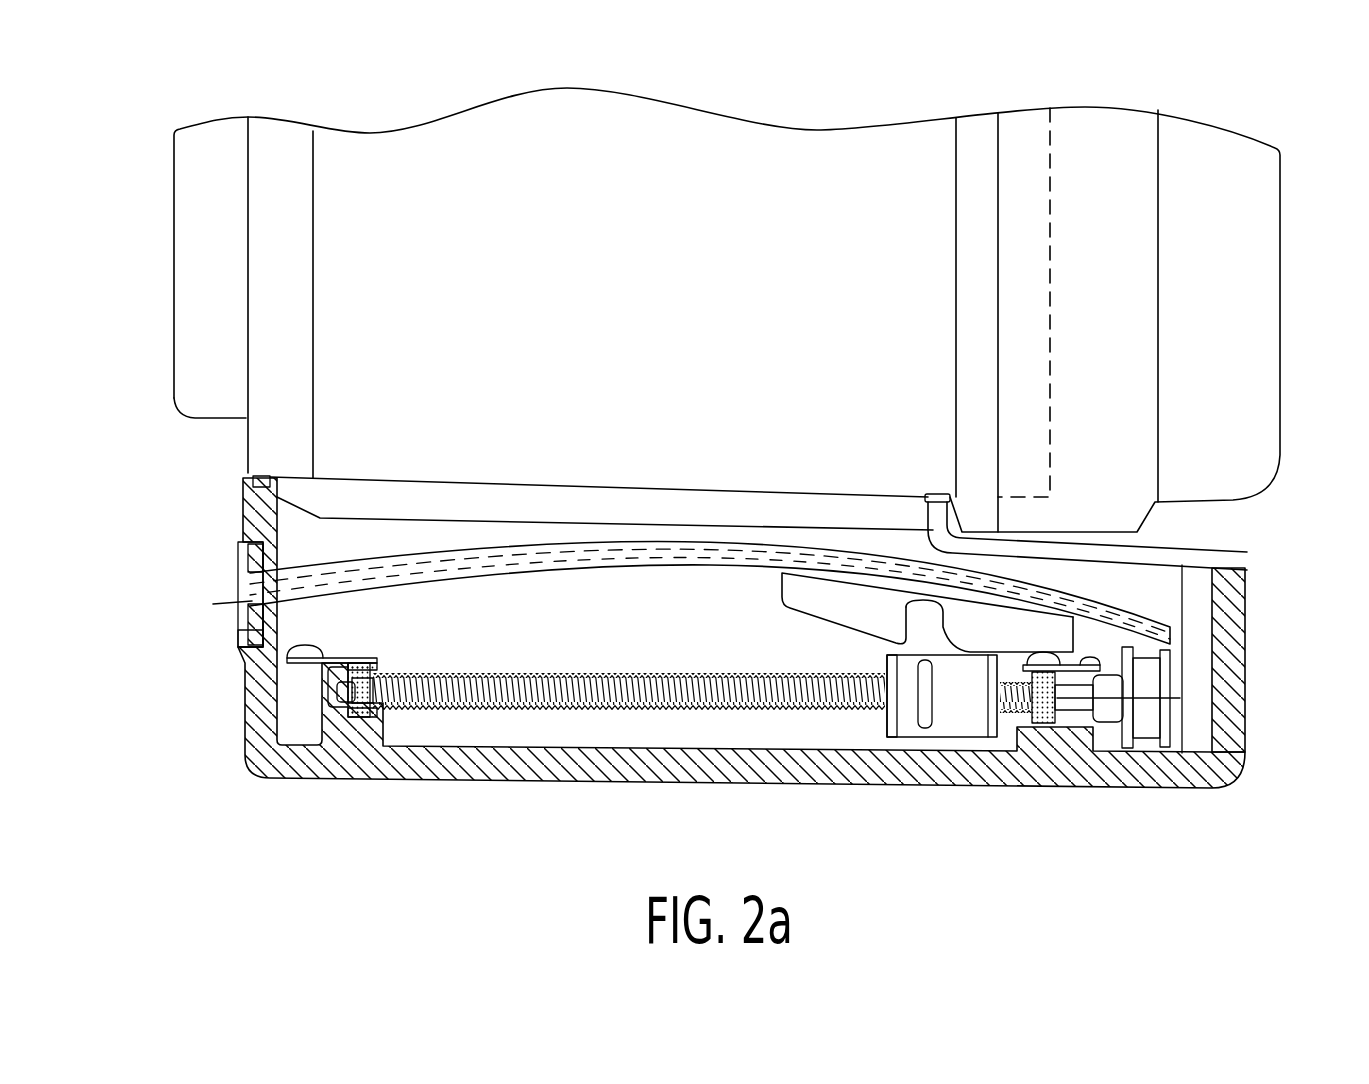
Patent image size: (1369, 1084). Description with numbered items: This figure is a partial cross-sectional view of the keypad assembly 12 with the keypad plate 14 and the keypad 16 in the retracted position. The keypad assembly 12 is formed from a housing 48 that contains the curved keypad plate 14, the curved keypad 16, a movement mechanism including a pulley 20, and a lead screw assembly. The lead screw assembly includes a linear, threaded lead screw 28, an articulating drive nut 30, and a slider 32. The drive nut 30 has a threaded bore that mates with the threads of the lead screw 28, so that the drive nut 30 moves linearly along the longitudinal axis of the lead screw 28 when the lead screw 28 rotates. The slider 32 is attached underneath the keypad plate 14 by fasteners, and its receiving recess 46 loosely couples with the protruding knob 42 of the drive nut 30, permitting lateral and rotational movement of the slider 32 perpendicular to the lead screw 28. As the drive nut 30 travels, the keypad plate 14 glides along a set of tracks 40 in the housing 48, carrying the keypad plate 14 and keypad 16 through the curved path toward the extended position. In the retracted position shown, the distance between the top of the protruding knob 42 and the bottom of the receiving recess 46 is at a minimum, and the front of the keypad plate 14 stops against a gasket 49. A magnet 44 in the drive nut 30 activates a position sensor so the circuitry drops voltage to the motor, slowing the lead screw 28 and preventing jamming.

The keypad assembly 12 is at (266, 782).
The keypad plate 14 is at (243, 570).
The keypad 16 is at (362, 571).
The pulley 20 is at (1147, 718).
The lead screw 28 is at (474, 700).
The drive nut 30 is at (905, 717).
The slider 32 is at (793, 590).
The set of tracks 40 is at (1140, 633).
The protruding knob 42 is at (928, 622).
The magnet 44 is at (923, 718).
The receiving recess 46 is at (913, 602).
The housing 48 is at (1223, 713).
The gasket 49 is at (243, 633).